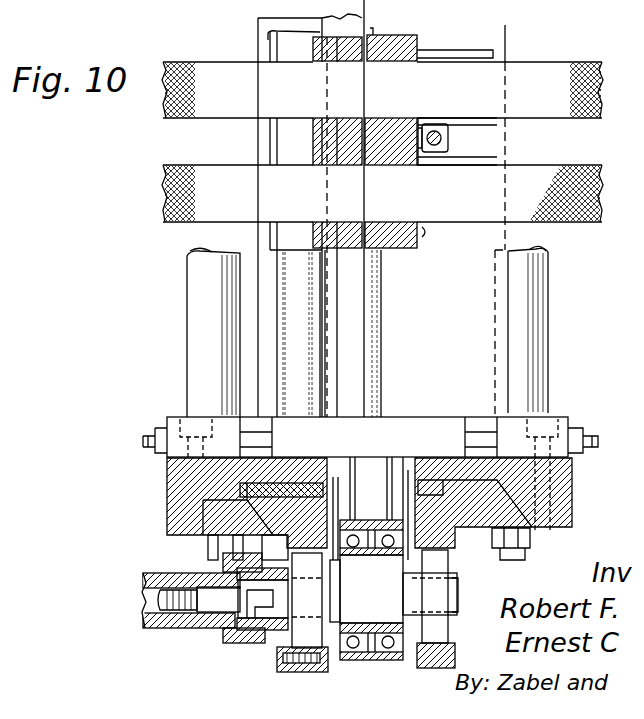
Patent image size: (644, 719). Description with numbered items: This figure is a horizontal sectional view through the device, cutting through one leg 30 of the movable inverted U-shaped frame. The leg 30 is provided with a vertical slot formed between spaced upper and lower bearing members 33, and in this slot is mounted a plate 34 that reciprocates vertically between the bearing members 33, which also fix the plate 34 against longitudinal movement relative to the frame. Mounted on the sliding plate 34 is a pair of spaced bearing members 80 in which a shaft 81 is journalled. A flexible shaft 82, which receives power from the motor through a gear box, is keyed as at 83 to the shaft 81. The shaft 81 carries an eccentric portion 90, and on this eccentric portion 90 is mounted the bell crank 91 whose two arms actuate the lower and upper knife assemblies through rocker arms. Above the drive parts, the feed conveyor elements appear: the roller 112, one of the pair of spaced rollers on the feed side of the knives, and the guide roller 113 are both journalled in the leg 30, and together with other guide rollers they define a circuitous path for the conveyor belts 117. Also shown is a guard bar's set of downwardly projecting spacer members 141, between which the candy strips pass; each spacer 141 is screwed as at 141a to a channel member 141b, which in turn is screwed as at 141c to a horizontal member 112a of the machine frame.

The horizontal member 112a is at (505, 25).
The roller 112 is at (283, 261).
The guide roller 113 is at (200, 296).
The conveyor belts 117 is at (200, 165).
The spacer members 141 is at (404, 118).
The screw 141a is at (425, 148).
The channel member 141b is at (440, 118).
The screw 141c is at (447, 138).
The plate 34 is at (463, 528).
The leg 30 is at (580, 524).
The bearing members 33 is at (210, 530).
The bell crank 91 is at (378, 660).
The eccentric portion 90 is at (380, 589).
The shaft 81 is at (437, 595).
The bearing members 80 is at (324, 672).
The flexible shaft 82 is at (178, 607).
The key 83 is at (255, 617).